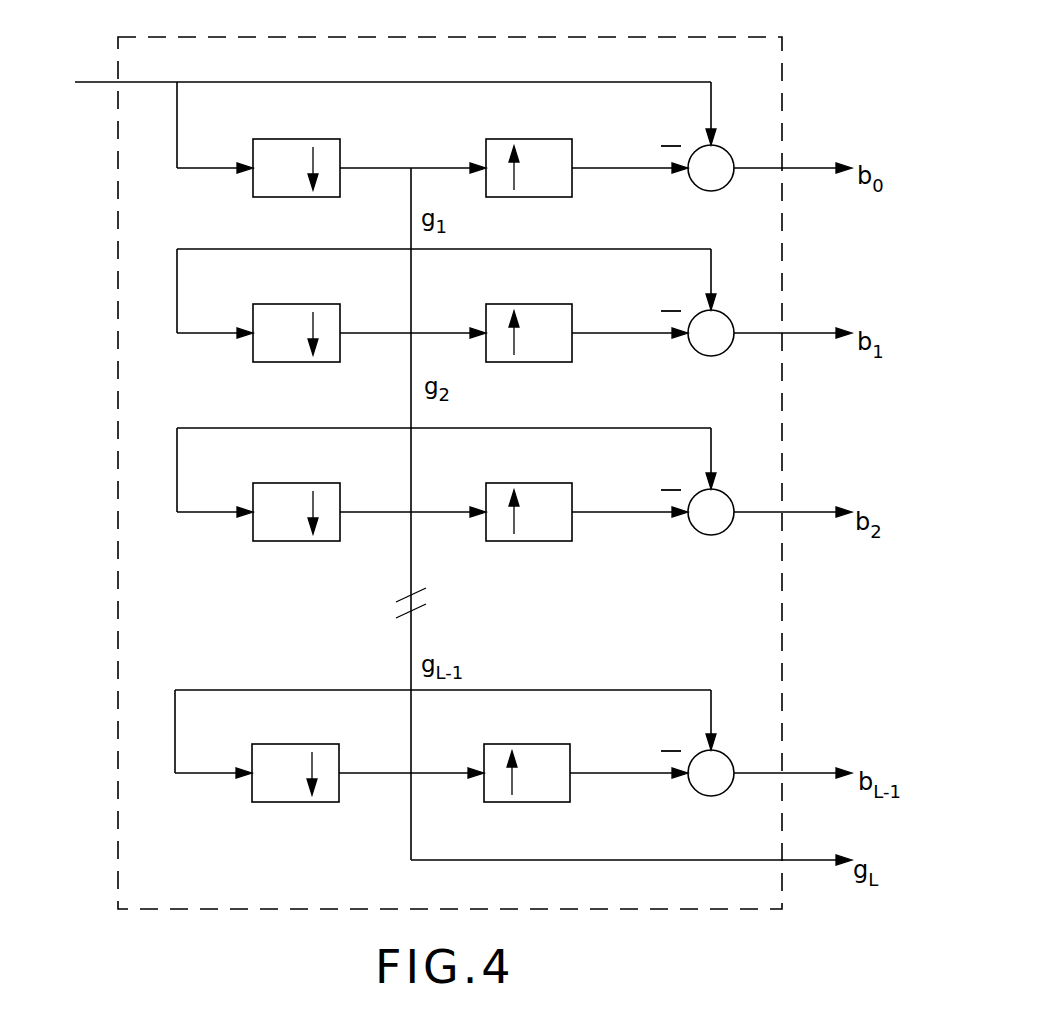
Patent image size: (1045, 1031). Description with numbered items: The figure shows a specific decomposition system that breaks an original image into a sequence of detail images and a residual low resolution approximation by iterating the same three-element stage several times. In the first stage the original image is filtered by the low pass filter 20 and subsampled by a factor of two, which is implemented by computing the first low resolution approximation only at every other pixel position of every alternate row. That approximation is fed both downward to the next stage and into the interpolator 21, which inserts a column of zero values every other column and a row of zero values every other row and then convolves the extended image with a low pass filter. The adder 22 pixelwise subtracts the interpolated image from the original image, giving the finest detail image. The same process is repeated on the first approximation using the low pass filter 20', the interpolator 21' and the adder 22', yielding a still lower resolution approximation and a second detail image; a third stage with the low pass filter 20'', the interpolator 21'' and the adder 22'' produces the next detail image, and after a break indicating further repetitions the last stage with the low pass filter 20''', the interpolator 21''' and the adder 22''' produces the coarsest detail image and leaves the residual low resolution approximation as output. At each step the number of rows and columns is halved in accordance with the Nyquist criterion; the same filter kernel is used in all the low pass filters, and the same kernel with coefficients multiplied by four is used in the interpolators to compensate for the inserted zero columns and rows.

The low pass filter 20 is at (304, 185).
The low pass filter 20' is at (309, 350).
The low pass filter 20'' is at (311, 531).
The low pass filter 20''' is at (314, 793).
The interpolator 21 is at (539, 185).
The interpolator 21' is at (543, 350).
The interpolator 21'' is at (545, 532).
The interpolator 21''' is at (547, 793).
The adder 22 is at (714, 159).
The adder 22' is at (716, 324).
The adder 22'' is at (715, 505).
The adder 22''' is at (722, 767).